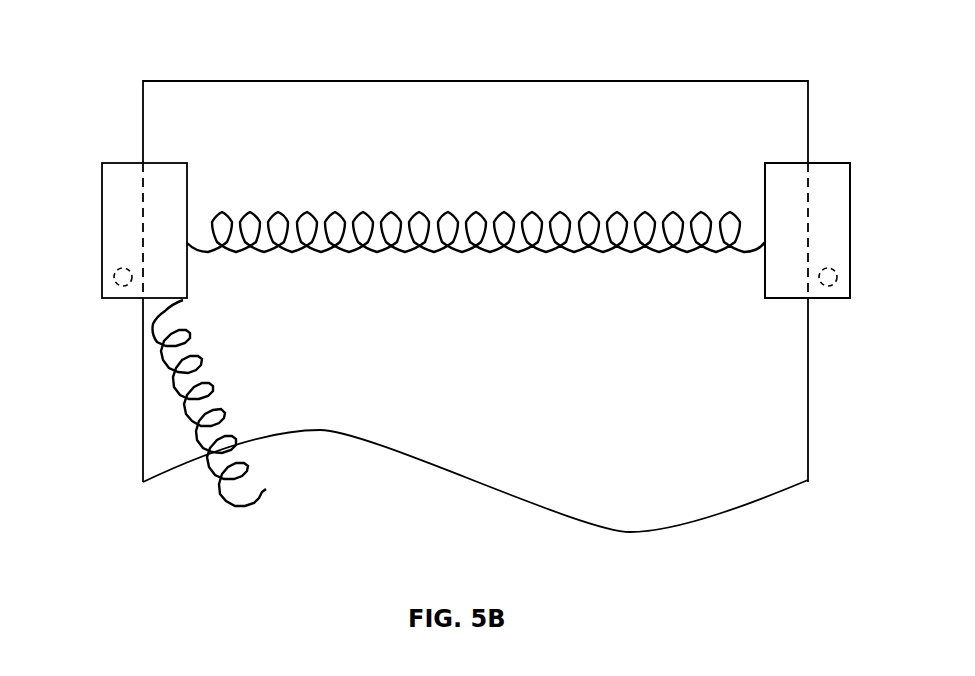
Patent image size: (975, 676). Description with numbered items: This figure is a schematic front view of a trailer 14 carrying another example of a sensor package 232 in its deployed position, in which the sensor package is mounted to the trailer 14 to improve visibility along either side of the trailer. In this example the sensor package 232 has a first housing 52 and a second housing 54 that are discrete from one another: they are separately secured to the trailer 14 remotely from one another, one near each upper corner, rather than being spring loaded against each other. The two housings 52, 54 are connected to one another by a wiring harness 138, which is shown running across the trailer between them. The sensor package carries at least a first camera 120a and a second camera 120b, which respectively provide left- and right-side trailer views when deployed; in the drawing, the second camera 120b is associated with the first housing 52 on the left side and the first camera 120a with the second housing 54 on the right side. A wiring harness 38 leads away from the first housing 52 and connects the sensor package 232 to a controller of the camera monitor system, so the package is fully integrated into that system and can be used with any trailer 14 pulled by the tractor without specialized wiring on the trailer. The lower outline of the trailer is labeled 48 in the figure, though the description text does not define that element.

The trailer 14 is at (800, 52).
The seat back frame 48 is at (785, 423).
The first housing 52 is at (132, 172).
The second housing 54 is at (820, 172).
The sensor package 232 is at (852, 157).
The second camera 120b is at (113, 273).
The first camera 120a is at (837, 273).
The wiring harness 138 is at (460, 255).
The wiring harness 38 is at (232, 503).